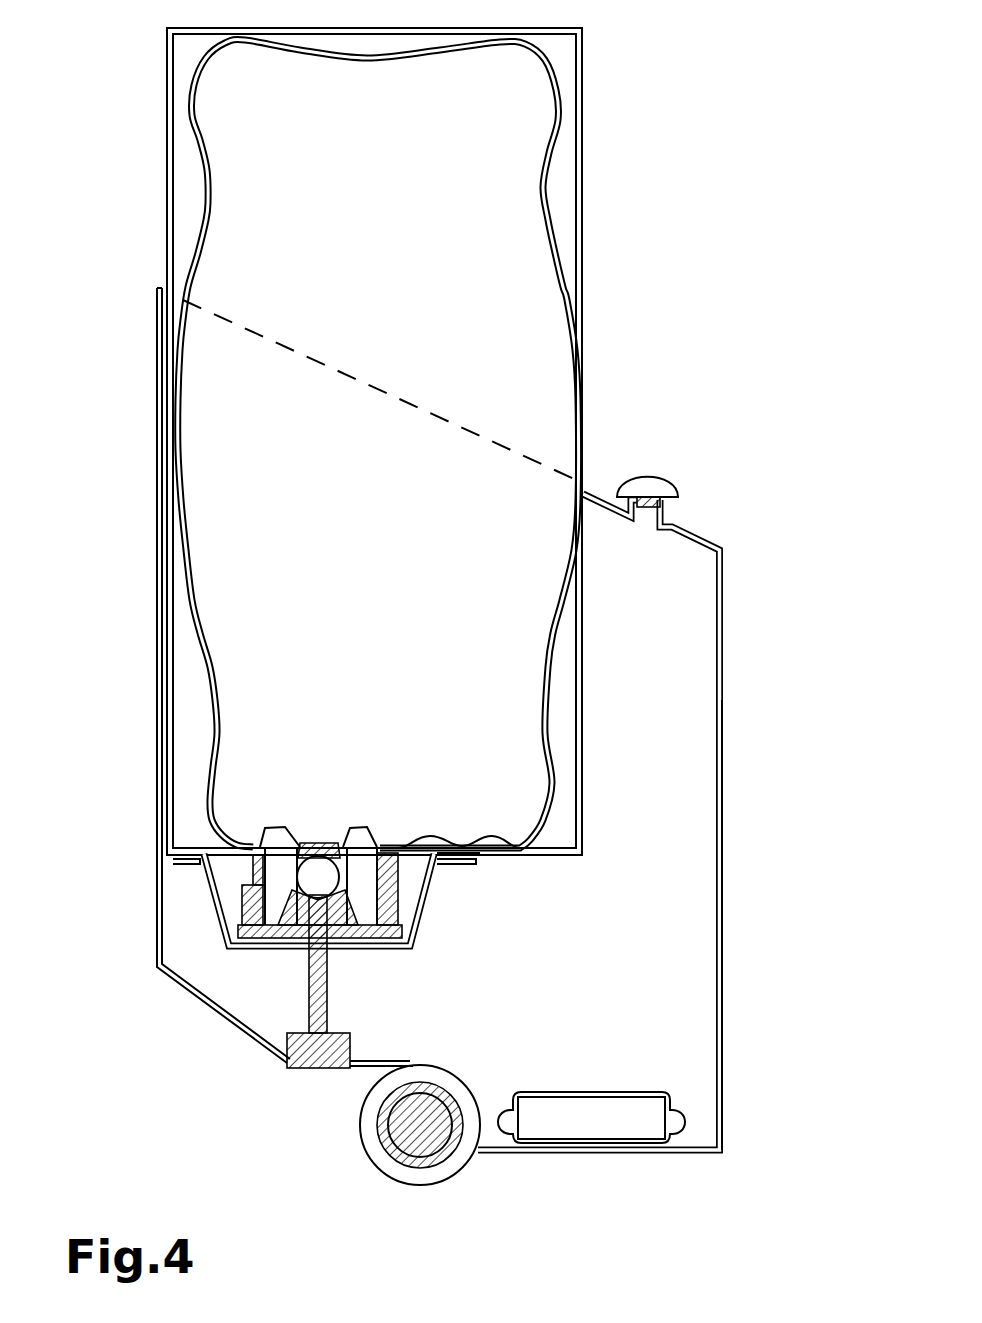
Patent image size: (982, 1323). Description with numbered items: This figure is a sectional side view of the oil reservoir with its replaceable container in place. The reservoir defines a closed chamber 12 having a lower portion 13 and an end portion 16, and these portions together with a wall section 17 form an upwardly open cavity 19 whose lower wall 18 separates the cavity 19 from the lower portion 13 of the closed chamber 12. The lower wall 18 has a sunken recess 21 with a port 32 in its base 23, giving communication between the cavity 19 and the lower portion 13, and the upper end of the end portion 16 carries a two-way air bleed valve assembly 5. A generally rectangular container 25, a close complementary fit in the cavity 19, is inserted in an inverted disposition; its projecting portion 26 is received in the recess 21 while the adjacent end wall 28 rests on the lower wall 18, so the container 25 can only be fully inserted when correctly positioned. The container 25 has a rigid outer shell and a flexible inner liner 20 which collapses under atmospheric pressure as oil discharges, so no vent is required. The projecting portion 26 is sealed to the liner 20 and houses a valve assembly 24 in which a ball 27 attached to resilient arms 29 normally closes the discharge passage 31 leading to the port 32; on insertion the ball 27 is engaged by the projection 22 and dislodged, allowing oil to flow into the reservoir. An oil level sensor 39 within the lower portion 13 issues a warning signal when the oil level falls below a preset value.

The two-way air bleed valve assembly 5 is at (657, 483).
The closed chamber 12 is at (690, 905).
The lower portion 13 is at (660, 1026).
The end portion 16 is at (690, 642).
The wall section 17 is at (157, 490).
The lower wall 18 is at (470, 862).
The cavity 19 is at (391, 601).
The inner liner 20 is at (553, 250).
The sunken recess 21 is at (203, 875).
The projection 22 is at (310, 1005).
The base 23 is at (380, 952).
The valve assembly 24 is at (332, 843).
The container 25 is at (583, 188).
The projecting portion 26 is at (247, 912).
The ball 27 is at (311, 858).
The end wall 28 is at (467, 840).
The resilient arms 29 is at (268, 827).
The discharge passage 31 is at (378, 922).
The port 32 is at (330, 935).
The oil level sensor 39 is at (587, 1132).